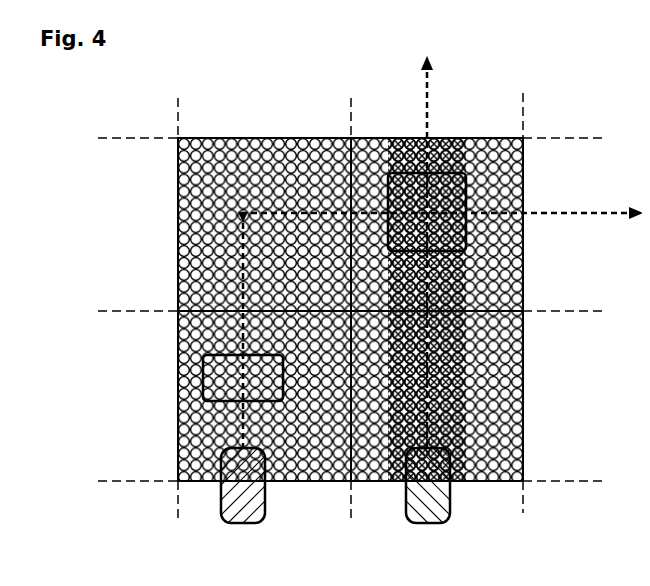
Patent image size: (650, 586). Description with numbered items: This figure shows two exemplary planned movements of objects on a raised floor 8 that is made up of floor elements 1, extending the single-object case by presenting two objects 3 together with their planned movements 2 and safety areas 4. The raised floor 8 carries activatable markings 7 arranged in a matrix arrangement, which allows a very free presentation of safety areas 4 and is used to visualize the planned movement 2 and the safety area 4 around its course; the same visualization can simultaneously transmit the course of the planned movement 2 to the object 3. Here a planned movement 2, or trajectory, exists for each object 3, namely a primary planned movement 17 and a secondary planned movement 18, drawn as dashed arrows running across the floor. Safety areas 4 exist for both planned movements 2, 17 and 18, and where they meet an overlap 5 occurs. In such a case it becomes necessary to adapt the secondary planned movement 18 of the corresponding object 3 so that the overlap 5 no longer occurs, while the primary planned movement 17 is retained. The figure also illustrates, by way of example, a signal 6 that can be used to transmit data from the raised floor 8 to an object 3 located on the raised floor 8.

The floor element 1 is at (248, 130).
The planned movement 2 is at (440, 242).
The object 3 is at (235, 515).
The safety area 4 is at (450, 131).
The overlap 5 is at (455, 243).
The signal 6 is at (195, 370).
The activatable marking 7 is at (485, 130).
The raised floor 8 is at (548, 113).
The primary planned movement 17 is at (555, 210).
The secondary planned movement 18 is at (414, 102).